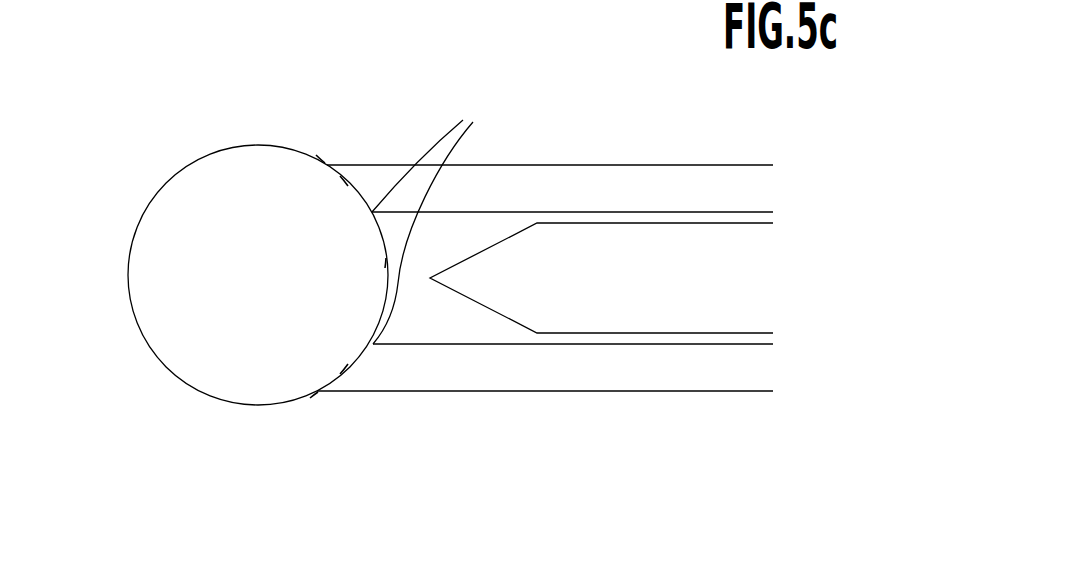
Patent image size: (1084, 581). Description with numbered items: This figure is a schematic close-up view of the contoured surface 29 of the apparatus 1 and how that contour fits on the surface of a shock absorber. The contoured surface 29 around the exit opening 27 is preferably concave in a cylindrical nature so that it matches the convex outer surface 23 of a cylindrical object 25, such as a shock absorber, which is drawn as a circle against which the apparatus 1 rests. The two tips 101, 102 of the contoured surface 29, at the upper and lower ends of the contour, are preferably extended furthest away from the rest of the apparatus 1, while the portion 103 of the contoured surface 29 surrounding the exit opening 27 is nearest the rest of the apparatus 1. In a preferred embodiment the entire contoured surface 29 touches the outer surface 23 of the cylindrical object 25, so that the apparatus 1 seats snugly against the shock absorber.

The apparatus 1 is at (618, 422).
The outer surface 23 is at (385, 262).
The cylindrical object 25 is at (132, 400).
The exit opening 27 is at (428, 315).
The contoured surface 29 is at (343, 181).
The tip 101 is at (327, 165).
The tip 102 is at (325, 390).
The portion 103 is at (445, 207).